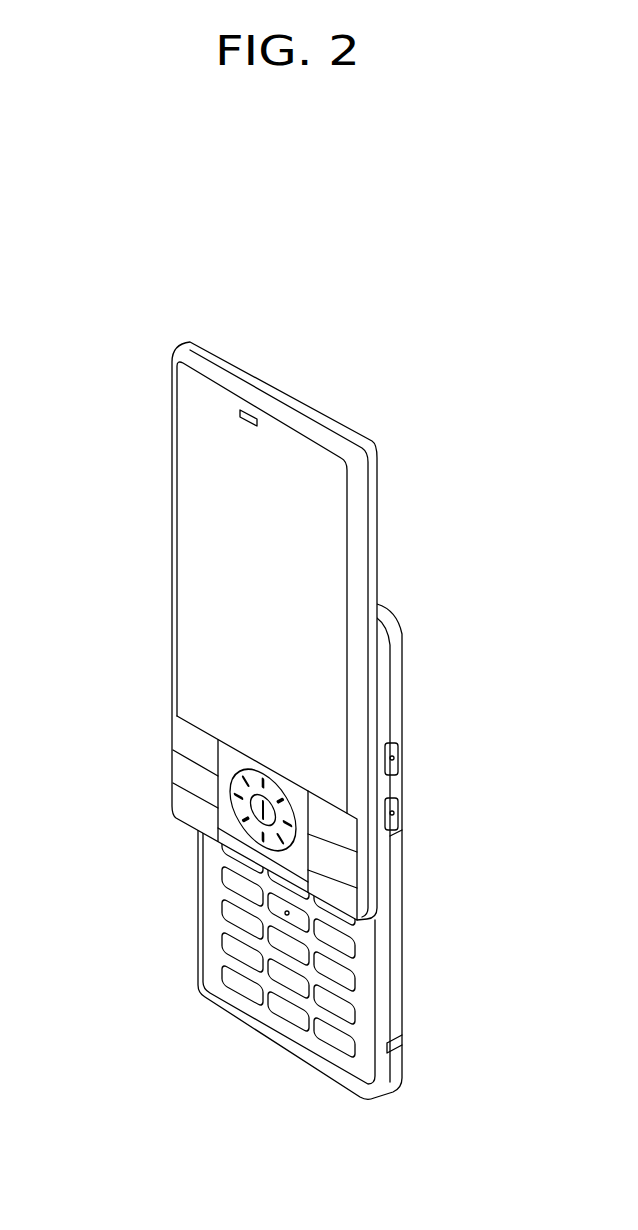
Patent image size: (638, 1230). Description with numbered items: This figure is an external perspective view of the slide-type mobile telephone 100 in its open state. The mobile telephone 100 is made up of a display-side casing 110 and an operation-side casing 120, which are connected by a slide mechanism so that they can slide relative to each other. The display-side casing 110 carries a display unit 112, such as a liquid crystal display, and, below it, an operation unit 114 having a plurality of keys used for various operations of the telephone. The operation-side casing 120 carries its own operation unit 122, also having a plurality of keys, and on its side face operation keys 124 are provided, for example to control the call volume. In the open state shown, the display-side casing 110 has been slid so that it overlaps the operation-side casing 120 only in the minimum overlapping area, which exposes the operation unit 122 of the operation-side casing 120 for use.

The mobile telephone 100 is at (381, 366).
The display-side casing 110 is at (377, 448).
The display unit 112 is at (195, 500).
The operation unit 114 is at (190, 735).
The operation-side casing 120 is at (400, 630).
The operation unit 122 is at (232, 912).
The operation keys 124 is at (403, 743).